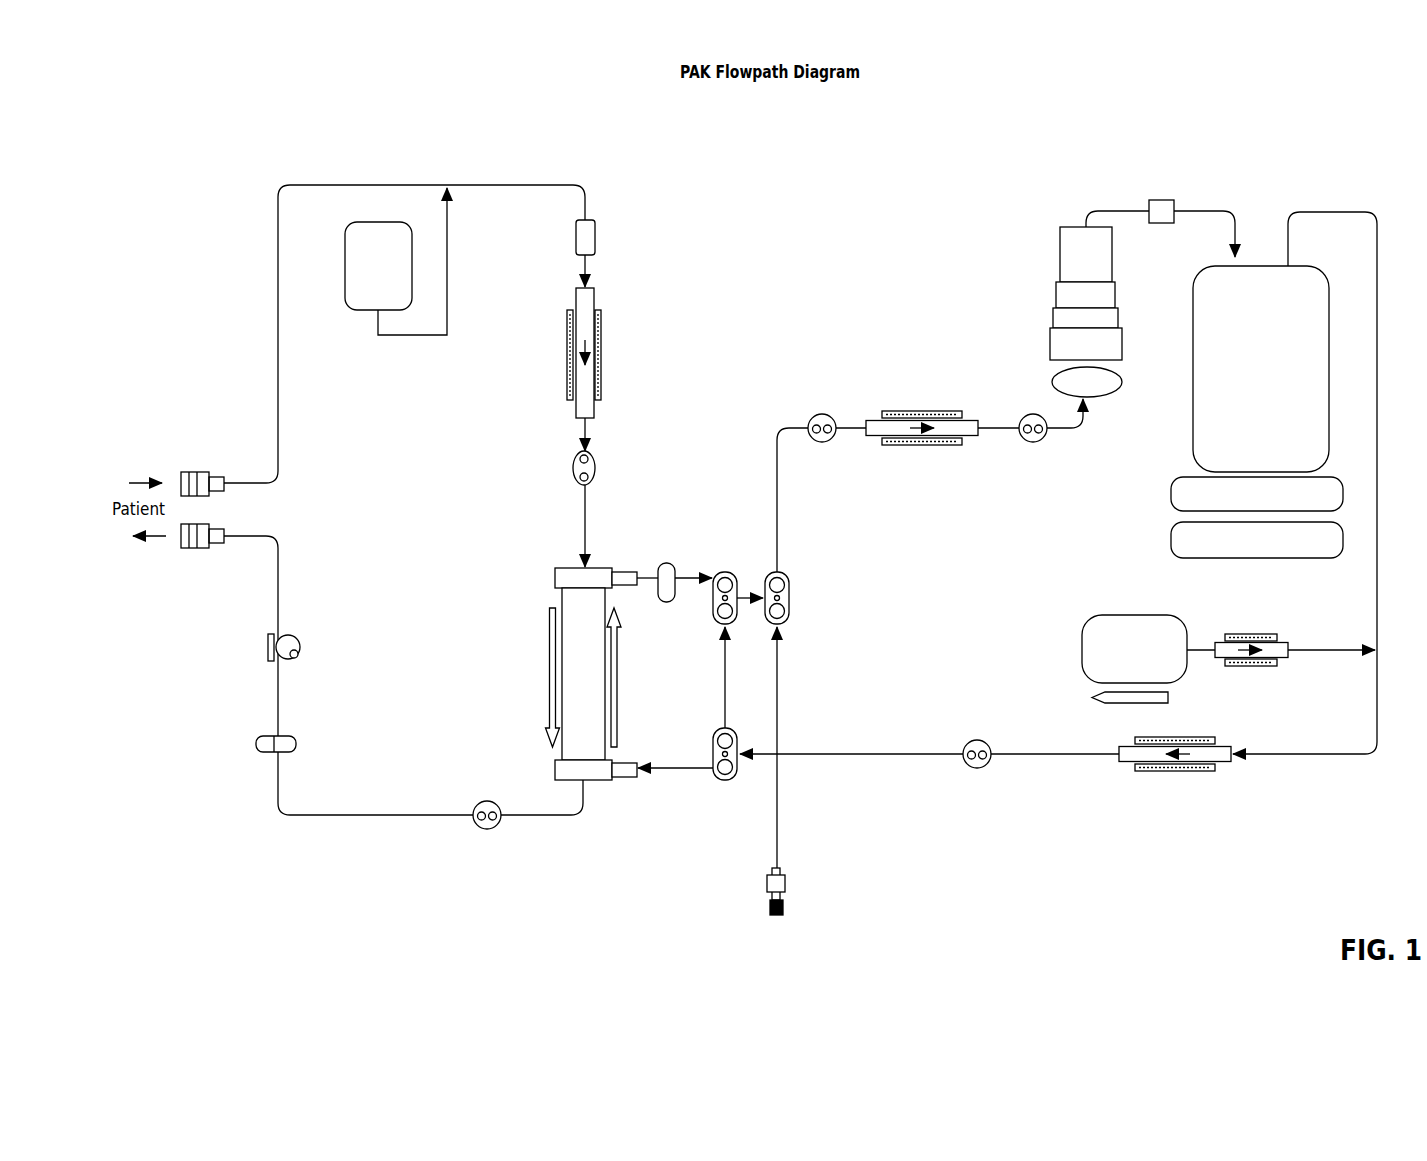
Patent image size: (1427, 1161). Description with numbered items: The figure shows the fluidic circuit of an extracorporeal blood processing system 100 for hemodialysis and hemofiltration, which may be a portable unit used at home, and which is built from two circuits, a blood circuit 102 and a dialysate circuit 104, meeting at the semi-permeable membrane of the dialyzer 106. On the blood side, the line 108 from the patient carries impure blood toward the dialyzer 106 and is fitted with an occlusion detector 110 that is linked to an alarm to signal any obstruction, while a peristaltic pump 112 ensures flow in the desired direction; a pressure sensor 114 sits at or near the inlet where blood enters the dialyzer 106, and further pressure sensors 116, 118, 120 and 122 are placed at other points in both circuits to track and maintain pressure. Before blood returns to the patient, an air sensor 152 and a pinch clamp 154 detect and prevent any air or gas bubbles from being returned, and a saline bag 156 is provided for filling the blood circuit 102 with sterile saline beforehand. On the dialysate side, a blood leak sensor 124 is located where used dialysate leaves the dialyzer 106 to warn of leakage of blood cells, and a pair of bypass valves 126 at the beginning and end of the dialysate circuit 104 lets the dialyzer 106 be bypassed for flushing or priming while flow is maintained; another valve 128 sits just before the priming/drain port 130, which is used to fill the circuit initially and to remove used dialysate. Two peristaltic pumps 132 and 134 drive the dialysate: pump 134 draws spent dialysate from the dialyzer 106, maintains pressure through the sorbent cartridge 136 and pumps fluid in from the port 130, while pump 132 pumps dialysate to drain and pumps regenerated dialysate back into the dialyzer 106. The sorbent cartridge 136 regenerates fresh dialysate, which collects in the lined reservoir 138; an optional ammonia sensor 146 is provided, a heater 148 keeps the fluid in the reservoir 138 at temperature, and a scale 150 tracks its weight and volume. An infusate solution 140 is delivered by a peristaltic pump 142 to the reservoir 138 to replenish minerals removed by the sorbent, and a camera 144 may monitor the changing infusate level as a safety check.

The extracorporeal blood processing system 100 is at (1322, 98).
The blood circuit 102 is at (403, 479).
The dialysate circuit 104 is at (915, 158).
The dialyzer 106 is at (566, 606).
The line from the patient 108 is at (318, 184).
The occlusion detector 110 is at (576, 240).
The peristaltic pump 112 is at (585, 303).
The pressure sensor 114 is at (595, 468).
The pressure sensor 116 is at (773, 431).
The pressure sensor 118 is at (1024, 416).
The pressure sensor 120 is at (974, 740).
The pressure sensor 122 is at (480, 803).
The blood leak sensor 124 is at (656, 568).
The bypass valves 126 is at (723, 572).
The valve 128 is at (787, 617).
The priming/drain port 130 is at (767, 883).
The peristaltic pump 132 is at (1120, 762).
The peristaltic pump 134 is at (917, 412).
The sorbent cartridge 136 is at (1060, 262).
The reservoir 138 is at (1265, 266).
The infusate solution 140 is at (1133, 615).
The peristaltic pump 142 is at (1265, 668).
The camera 144 is at (1168, 697).
The ammonia sensor 146 is at (1149, 205).
The heater 148 is at (1171, 537).
The scale 150 is at (1190, 476).
The air sensor 152 is at (297, 743).
The pinch clamp 154 is at (299, 651).
The saline bag 156 is at (345, 265).